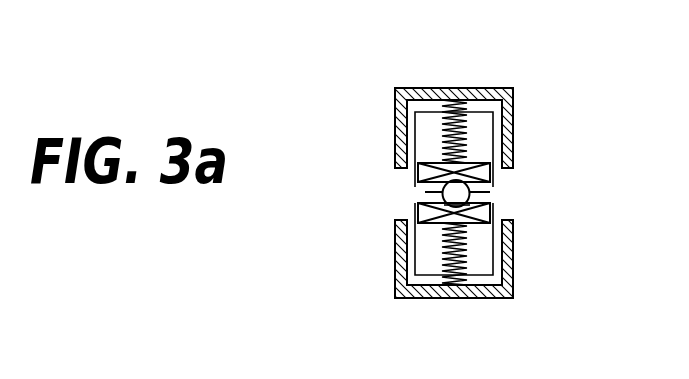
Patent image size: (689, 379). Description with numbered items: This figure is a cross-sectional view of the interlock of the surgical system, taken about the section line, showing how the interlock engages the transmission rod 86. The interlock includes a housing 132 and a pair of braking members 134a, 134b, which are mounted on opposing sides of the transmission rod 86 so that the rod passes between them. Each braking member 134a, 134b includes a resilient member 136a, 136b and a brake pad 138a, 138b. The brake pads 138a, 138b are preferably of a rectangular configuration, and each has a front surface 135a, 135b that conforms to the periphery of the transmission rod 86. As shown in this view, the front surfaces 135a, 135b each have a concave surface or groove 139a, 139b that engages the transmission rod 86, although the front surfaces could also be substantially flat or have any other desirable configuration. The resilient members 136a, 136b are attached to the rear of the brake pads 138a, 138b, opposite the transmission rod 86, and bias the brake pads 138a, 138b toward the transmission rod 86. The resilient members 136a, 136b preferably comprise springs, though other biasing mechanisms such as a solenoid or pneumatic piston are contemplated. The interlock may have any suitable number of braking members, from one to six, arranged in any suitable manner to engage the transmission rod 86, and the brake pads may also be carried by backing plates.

The housing 132 is at (514, 118).
The braking member 134a is at (414, 180).
The braking member 134b is at (414, 206).
The front surface 135a is at (470, 190).
The front surface 135b is at (486, 197).
The resilient member 136a is at (447, 118).
The resilient member 136b is at (455, 260).
The brake pad 138a is at (430, 167).
The brake pad 138b is at (424, 218).
The concave surface or groove 139a is at (443, 193).
The concave surface or groove 139b is at (492, 215).
The transmission rod 86 is at (414, 207).